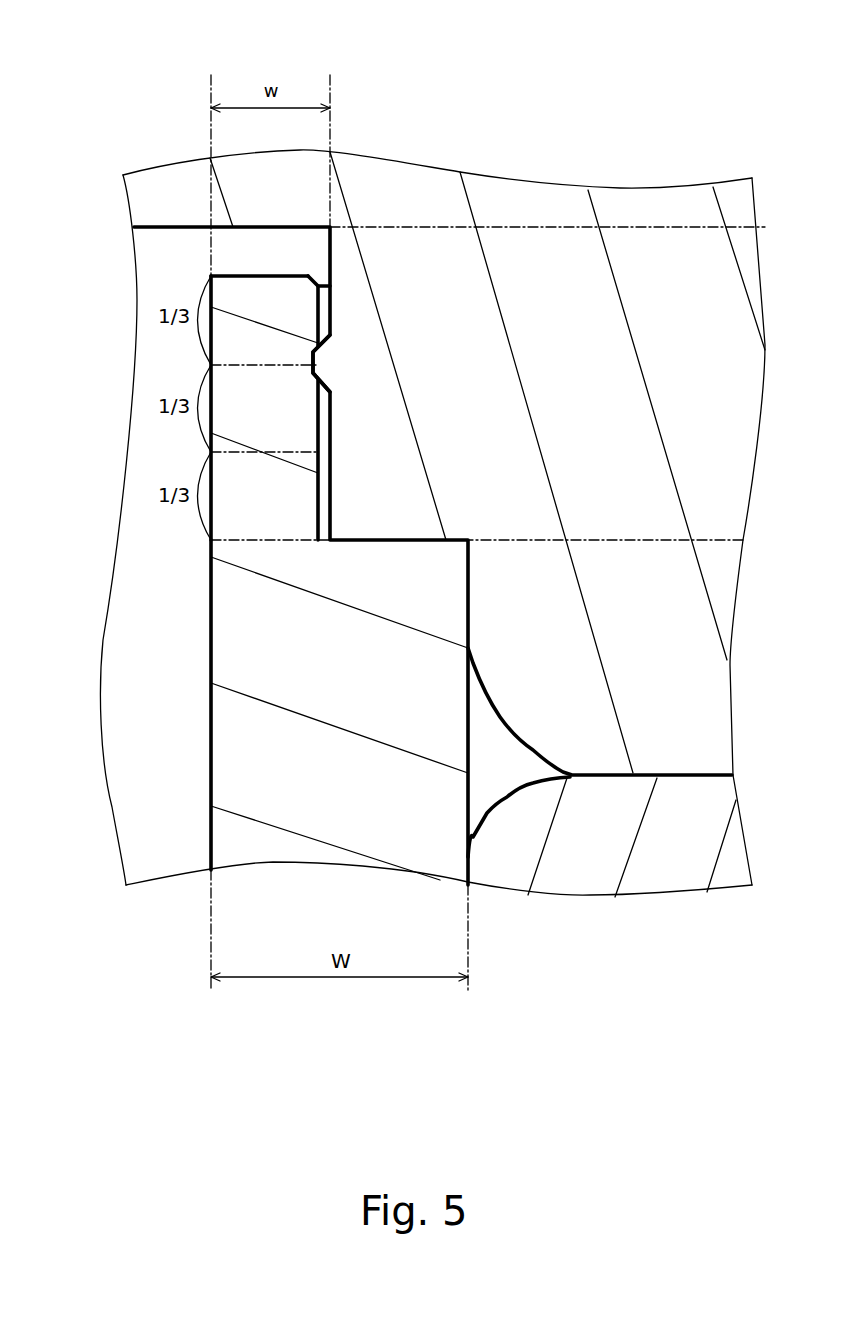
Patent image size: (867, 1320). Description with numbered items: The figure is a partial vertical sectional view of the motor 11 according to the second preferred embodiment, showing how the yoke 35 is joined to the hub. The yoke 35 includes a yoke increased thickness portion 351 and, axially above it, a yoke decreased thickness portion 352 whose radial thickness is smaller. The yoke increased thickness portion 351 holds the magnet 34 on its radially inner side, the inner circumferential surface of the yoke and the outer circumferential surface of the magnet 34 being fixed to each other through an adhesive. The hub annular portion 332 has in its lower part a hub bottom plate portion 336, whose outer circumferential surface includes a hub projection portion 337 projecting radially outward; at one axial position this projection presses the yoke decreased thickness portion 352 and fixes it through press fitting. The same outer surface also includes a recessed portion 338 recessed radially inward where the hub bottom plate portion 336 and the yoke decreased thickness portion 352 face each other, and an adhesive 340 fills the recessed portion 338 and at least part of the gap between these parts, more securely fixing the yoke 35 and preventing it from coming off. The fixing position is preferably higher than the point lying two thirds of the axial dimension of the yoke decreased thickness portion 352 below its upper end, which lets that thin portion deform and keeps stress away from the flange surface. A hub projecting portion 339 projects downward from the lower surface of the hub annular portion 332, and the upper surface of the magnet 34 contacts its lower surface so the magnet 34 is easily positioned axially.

The motor 11 is at (503, 110).
The magnet 34 is at (643, 870).
The yoke 35 is at (255, 710).
The yoke increased thickness portion 351 is at (263, 800).
The yoke decreased thickness portion 352 is at (248, 508).
The hub annular portion 332 is at (562, 400).
The hub bottom plate portion 336 is at (562, 400).
The hub projection portion 337 is at (320, 363).
The recessed portion 338 is at (333, 477).
The hub projecting portion 339 is at (635, 712).
The adhesive 340 is at (323, 312).